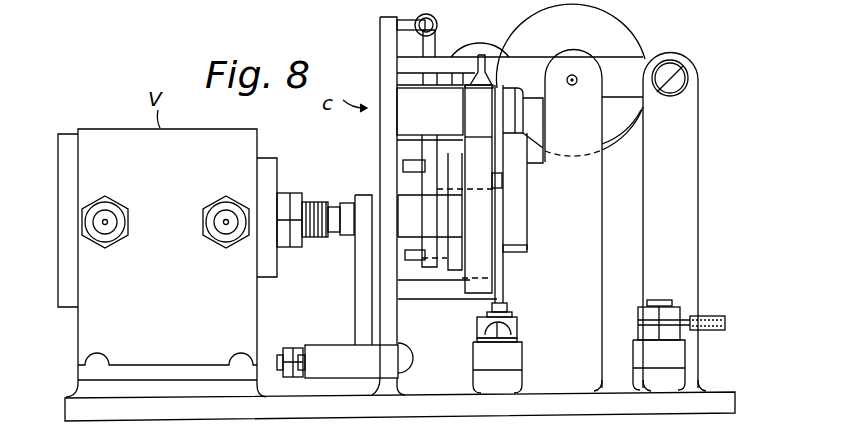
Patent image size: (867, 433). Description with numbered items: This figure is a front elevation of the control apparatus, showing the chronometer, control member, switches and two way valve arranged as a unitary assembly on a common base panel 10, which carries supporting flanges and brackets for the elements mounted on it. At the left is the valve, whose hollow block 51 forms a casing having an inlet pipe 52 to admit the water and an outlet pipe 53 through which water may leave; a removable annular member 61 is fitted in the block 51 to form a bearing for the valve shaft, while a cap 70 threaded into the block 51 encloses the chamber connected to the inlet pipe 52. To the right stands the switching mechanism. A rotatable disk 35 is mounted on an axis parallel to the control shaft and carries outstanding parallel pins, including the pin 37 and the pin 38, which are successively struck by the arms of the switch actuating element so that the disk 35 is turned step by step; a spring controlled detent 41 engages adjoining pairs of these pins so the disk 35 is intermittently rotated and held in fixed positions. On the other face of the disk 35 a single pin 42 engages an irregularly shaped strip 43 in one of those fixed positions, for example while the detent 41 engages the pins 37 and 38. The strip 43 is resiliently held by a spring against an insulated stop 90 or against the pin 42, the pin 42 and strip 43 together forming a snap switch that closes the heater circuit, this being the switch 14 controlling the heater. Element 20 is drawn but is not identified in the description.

The common base panel 10 is at (736, 398).
The switch 14 is at (518, 266).
The rod 20 is at (499, 258).
The rotatable disk 35 is at (452, 272).
The pin 37 is at (405, 166).
The pin 38 is at (412, 262).
The spring controlled detent 41 is at (426, 188).
The pin 42 is at (503, 182).
The irregularly shaped strip 43 is at (486, 213).
The hollow block 51 is at (245, 322).
The inlet pipe 52 is at (108, 233).
The outlet pipe 53 is at (216, 233).
The removable annular member 61 is at (270, 157).
The cap 70 is at (64, 236).
The insulated stop 90 is at (504, 297).